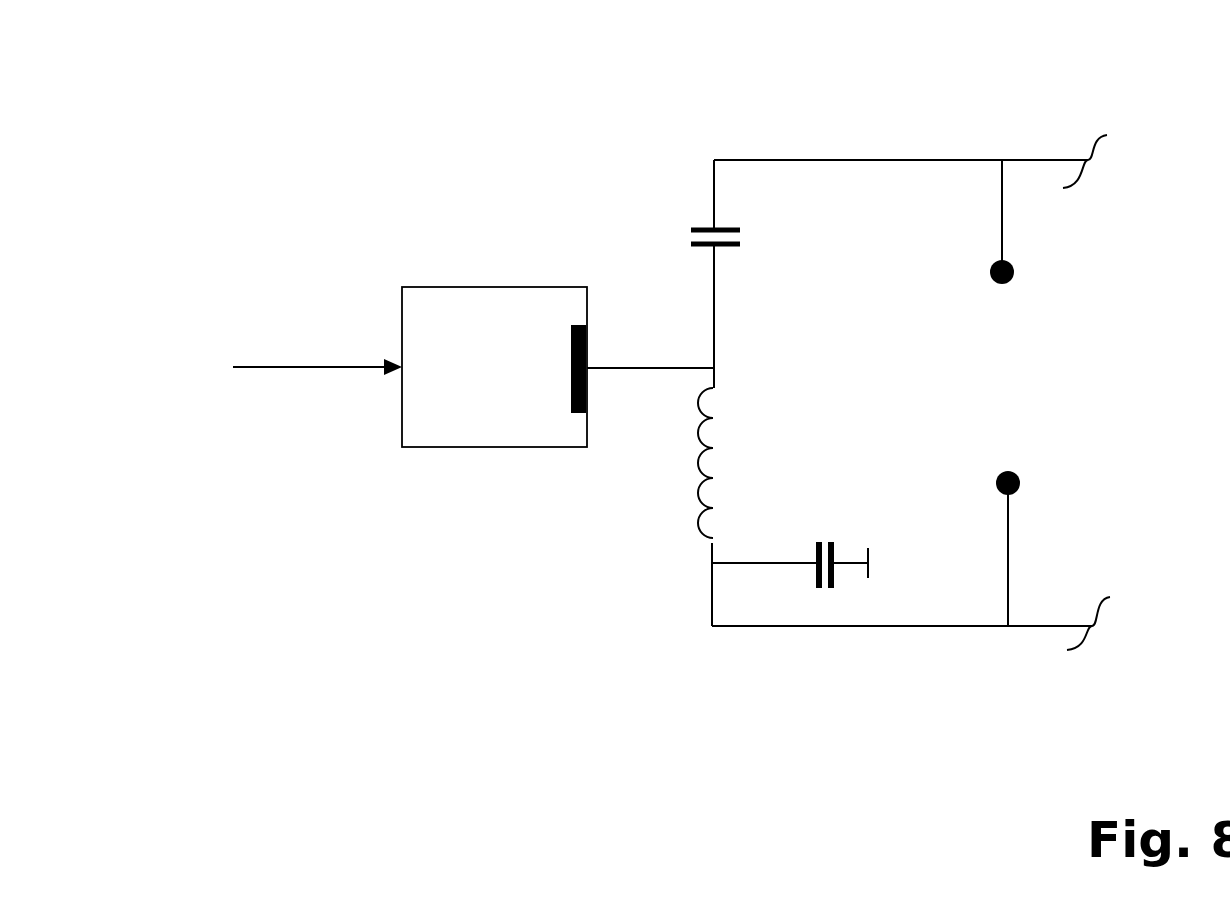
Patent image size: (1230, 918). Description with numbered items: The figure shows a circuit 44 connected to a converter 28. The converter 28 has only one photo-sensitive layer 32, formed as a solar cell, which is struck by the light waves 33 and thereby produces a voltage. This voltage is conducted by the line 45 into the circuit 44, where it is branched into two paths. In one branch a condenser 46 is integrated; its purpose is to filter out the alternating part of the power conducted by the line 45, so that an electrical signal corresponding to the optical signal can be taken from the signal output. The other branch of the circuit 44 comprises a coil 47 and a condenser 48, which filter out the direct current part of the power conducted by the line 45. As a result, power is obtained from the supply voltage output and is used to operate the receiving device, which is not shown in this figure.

The converter 28 is at (494, 367).
The photo-sensitive layer 32 is at (572, 405).
The light waves 33 is at (320, 367).
The circuit 44 is at (950, 96).
The line 45 is at (652, 372).
The condenser 46 is at (652, 221).
The coil 47 is at (700, 532).
The condenser 48 is at (822, 620).